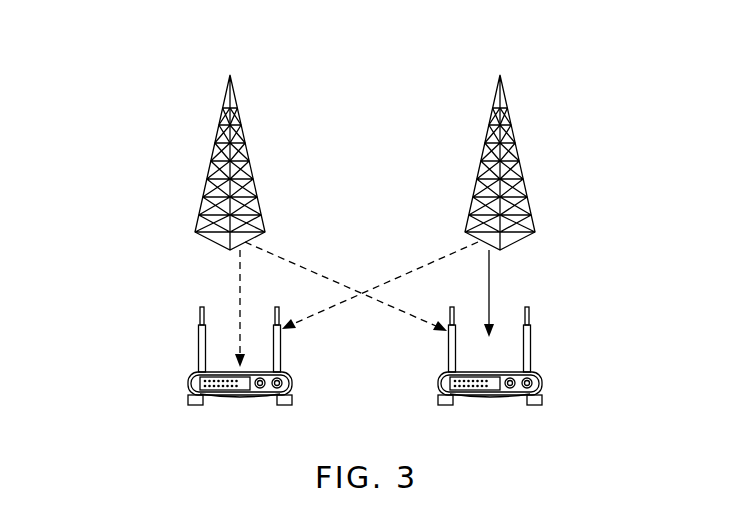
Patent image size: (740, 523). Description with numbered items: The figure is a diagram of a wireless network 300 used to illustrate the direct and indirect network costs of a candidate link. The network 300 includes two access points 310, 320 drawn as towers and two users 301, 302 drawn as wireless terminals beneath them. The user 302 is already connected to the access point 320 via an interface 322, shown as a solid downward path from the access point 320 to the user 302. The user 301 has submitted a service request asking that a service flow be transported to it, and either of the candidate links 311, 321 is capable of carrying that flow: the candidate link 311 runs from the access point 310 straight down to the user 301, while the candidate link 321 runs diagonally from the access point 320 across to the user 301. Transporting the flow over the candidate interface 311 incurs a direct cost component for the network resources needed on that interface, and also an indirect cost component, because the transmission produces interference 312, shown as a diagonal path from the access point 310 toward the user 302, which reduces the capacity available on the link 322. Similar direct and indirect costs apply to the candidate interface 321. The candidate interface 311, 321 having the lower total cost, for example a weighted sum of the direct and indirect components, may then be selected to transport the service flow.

The wireless network 300 is at (126, 85).
The access point 310 is at (210, 158).
The access point 320 is at (519, 158).
The user 301 is at (188, 392).
The user 302 is at (542, 392).
The candidate link 311 is at (239, 287).
The interference 312 is at (314, 271).
The candidate link 321 is at (421, 268).
The interface 322 is at (490, 287).